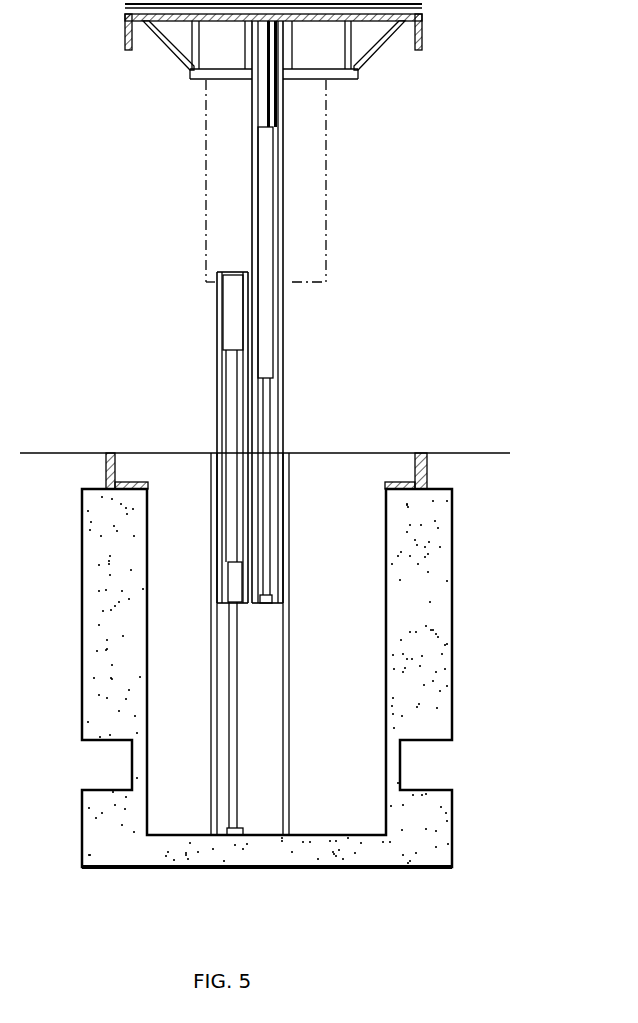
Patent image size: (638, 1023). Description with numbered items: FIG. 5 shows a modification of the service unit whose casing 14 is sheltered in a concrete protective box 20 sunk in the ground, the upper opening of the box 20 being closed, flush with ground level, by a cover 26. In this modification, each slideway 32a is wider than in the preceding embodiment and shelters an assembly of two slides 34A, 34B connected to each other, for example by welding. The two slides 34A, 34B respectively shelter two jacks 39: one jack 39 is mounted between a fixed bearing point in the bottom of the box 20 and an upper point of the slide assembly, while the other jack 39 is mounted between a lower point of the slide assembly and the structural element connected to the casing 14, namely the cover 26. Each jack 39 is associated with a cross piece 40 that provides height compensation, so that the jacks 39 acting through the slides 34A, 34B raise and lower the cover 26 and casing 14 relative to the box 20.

The casing 14 is at (340, 176).
The protective box 20 is at (430, 592).
The cover 26 is at (220, 53).
The slideway 32a is at (288, 748).
The slide 34A is at (217, 410).
The slide 34B is at (283, 410).
The jack 39 is at (265, 315).
The cross piece 40 is at (265, 112).